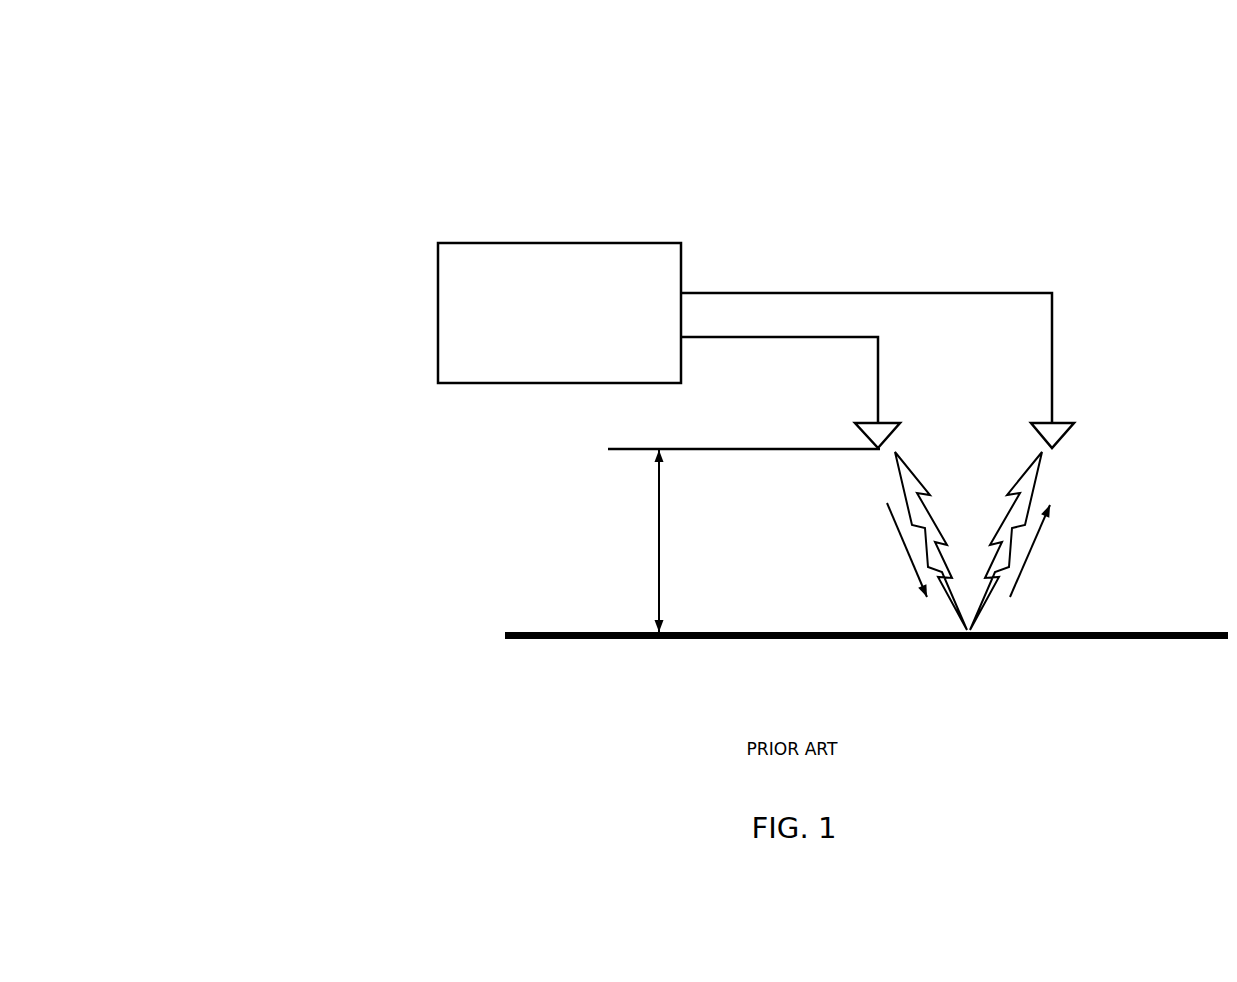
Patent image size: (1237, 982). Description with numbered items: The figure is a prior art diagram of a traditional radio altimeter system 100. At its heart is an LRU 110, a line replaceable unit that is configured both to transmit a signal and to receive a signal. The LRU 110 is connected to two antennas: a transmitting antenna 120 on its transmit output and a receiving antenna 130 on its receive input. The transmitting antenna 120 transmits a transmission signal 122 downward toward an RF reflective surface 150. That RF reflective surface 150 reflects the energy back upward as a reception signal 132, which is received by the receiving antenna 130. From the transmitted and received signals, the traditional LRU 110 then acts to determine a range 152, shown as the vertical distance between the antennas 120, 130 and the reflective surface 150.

The traditional radio altimeter system 100 is at (263, 138).
The LRU 110 is at (438, 287).
The transmitting antenna 120 is at (862, 392).
The transmission signal 122 is at (898, 564).
The receiving antenna 130 is at (1033, 397).
The reception signal 132 is at (1042, 560).
The RF reflective surface 150 is at (532, 633).
The range 152 is at (659, 547).